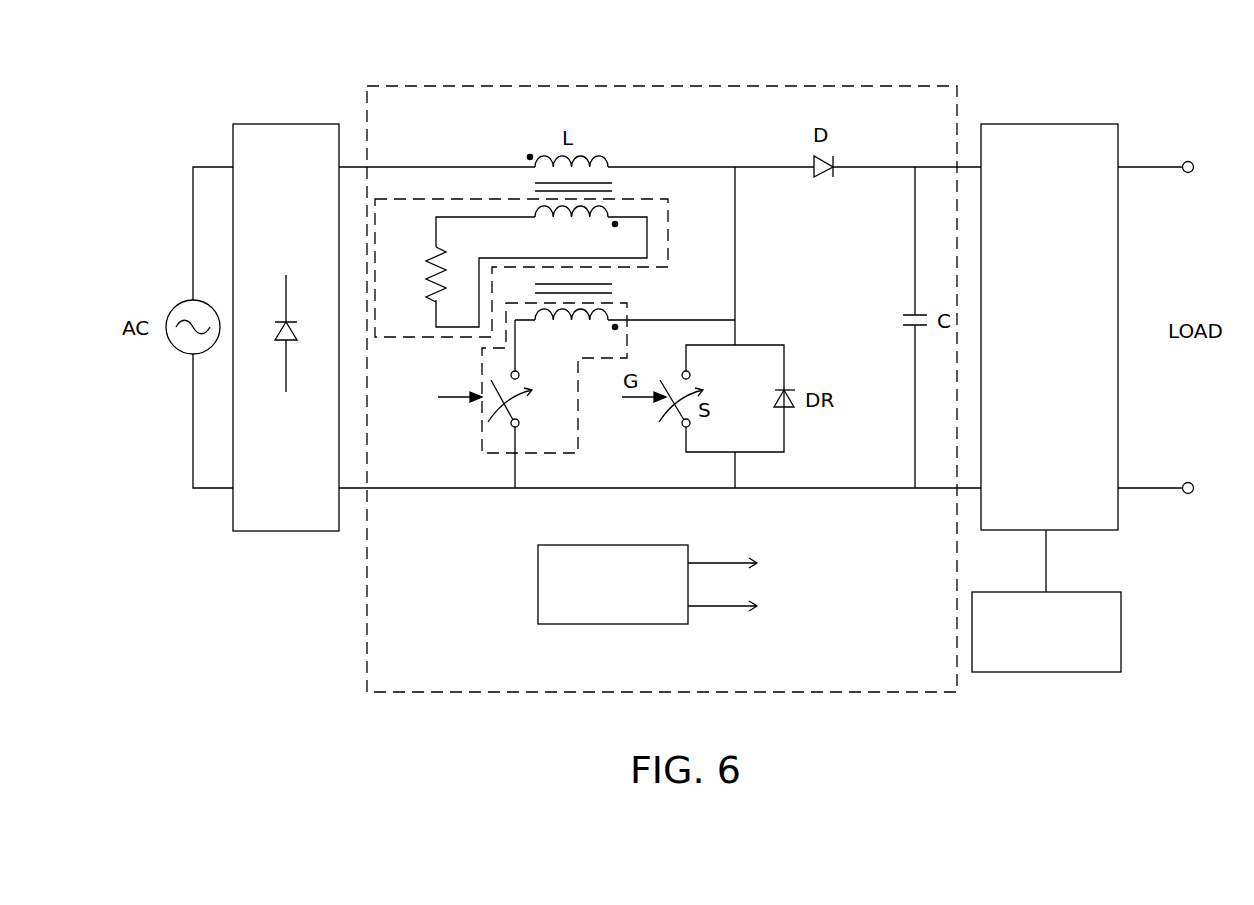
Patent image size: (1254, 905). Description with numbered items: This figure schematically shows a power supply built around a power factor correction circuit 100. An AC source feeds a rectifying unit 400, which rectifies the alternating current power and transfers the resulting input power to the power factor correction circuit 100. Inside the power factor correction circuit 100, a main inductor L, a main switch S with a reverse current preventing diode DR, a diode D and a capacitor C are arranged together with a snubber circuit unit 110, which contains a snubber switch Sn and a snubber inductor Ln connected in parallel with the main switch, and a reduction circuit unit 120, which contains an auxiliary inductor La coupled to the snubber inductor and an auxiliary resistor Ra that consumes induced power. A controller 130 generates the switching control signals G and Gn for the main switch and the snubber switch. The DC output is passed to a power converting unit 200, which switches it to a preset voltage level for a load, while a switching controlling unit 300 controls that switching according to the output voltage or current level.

The power factor correction circuit 100 is at (367, 632).
The snubber circuit unit 110 is at (627, 308).
The reduction circuit unit 120 is at (668, 228).
The controller 130 is at (607, 624).
The power converting unit 200 is at (1037, 142).
The switching controlling unit 300 is at (1121, 625).
The rectifying unit 400 is at (282, 135).